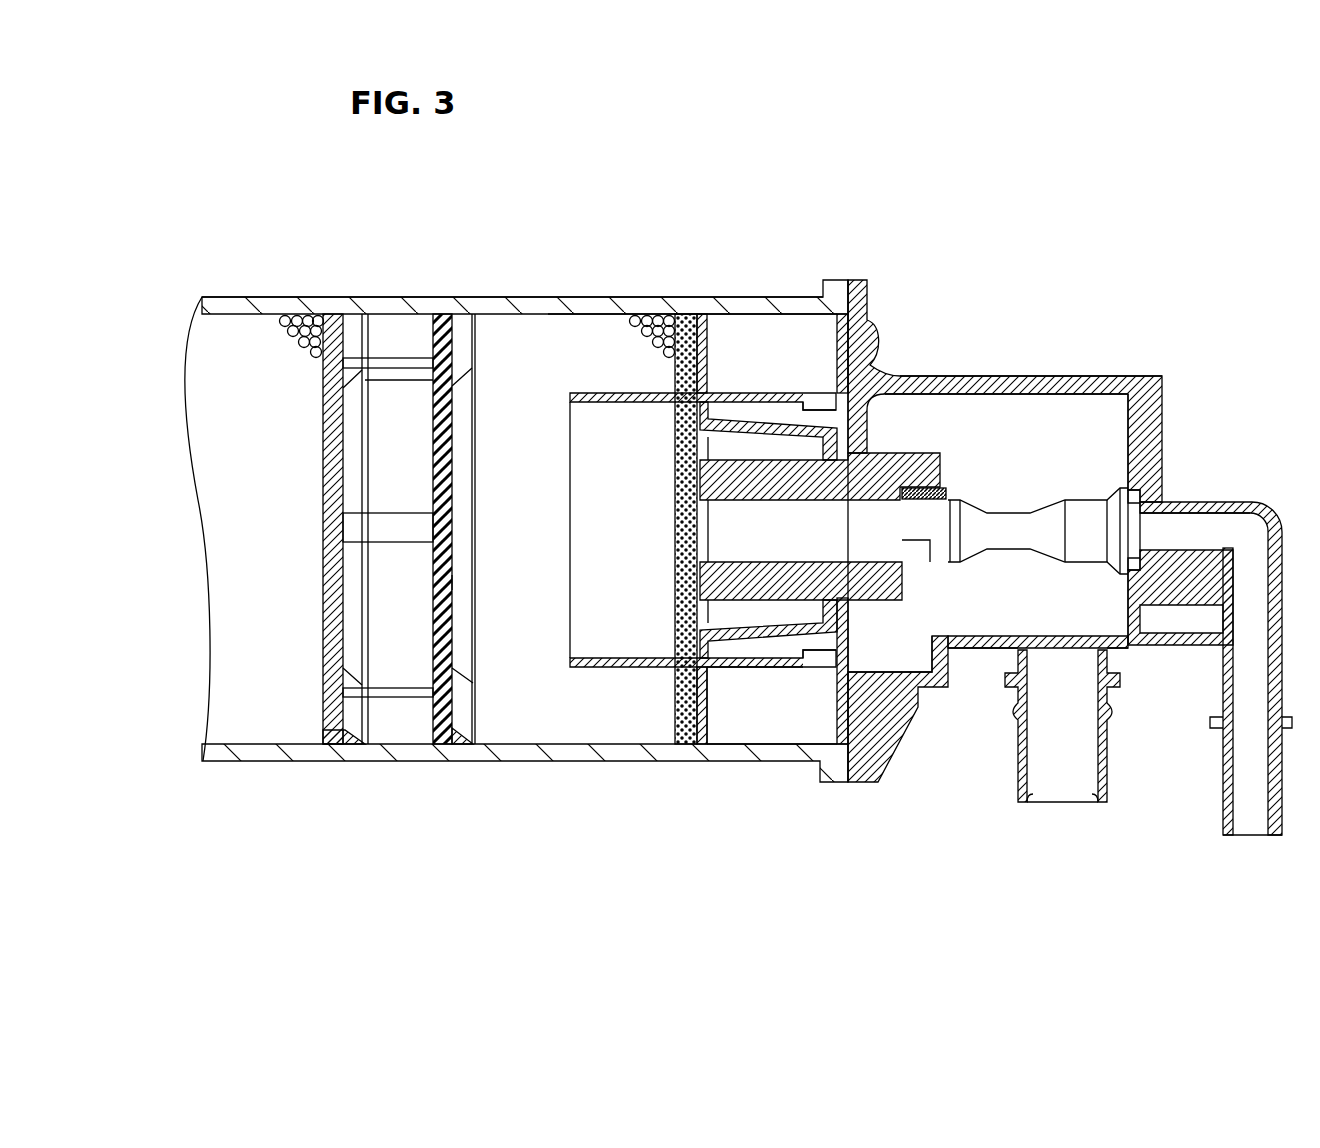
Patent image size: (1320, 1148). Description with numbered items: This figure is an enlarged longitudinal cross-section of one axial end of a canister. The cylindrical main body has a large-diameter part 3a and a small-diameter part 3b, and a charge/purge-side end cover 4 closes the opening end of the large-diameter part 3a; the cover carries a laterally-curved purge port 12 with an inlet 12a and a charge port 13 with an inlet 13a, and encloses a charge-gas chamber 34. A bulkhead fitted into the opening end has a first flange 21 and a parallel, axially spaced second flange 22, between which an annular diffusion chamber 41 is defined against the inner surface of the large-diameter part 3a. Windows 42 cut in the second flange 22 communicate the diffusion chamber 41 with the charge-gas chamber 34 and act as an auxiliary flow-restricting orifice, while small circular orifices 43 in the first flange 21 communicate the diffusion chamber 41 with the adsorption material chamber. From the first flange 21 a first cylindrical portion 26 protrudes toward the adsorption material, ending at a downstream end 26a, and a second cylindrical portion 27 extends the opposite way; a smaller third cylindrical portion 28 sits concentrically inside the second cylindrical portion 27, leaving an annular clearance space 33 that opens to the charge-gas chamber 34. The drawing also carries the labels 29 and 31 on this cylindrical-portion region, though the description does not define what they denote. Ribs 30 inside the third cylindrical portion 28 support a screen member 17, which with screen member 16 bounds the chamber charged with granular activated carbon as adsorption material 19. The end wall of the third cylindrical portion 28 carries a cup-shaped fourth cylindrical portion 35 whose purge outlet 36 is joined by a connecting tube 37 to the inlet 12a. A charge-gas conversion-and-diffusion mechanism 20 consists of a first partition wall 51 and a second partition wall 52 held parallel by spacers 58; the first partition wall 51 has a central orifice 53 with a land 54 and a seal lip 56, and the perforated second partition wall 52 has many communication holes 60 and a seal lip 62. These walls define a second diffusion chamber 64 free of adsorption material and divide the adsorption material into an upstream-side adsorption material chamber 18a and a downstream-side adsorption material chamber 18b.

The large-diameter part 3a is at (720, 303).
The small-diameter part 3b is at (197, 398).
The charge/purge-side end cover 4 is at (1158, 386).
The purge port 12 is at (1248, 827).
The inlet of purge port 12a is at (1150, 540).
The charge port 13 is at (1062, 792).
The inlet of charge port 13a is at (1090, 798).
The screen member 16 is at (672, 722).
The screen member 17 is at (674, 610).
The upstream-side adsorption material chamber 18a is at (547, 335).
The downstream-side adsorption material chamber 18b is at (225, 337).
The adsorption material 19 is at (646, 345).
The charge-gas conversion-and-diffusion mechanism 20 is at (424, 511).
The first flange 21 is at (708, 720).
The second flange 22 is at (830, 712).
The first cylindrical portion 26 is at (588, 396).
The downstream end of first cylindrical portion 26a is at (575, 670).
The second cylindrical portion 27 is at (743, 668).
The third cylindrical portion 28 is at (773, 632).
The passage 29 is at (690, 420).
The radially-extending ribs 30 is at (836, 497).
The passage 31 is at (690, 487).
The annular clearance space 33 is at (731, 638).
The charge-gas chamber 34 is at (1042, 410).
The fourth cylindrical portion 35 is at (868, 601).
The purge outlet 36 is at (912, 522).
The connecting tube 37 is at (1083, 512).
The diffusion chamber 41 is at (775, 730).
The windows 42 is at (825, 400).
The orifices 43 is at (688, 383).
The first partition wall 51 is at (438, 313).
The second partition wall 52 is at (345, 313).
The orifice 53 is at (456, 580).
The land 54 is at (458, 508).
The seal lip 56 is at (465, 735).
The spacers 58 is at (401, 697).
The communication holes 60 is at (323, 705).
The seal lip 62 is at (369, 735).
The second diffusion chamber 64 is at (413, 402).